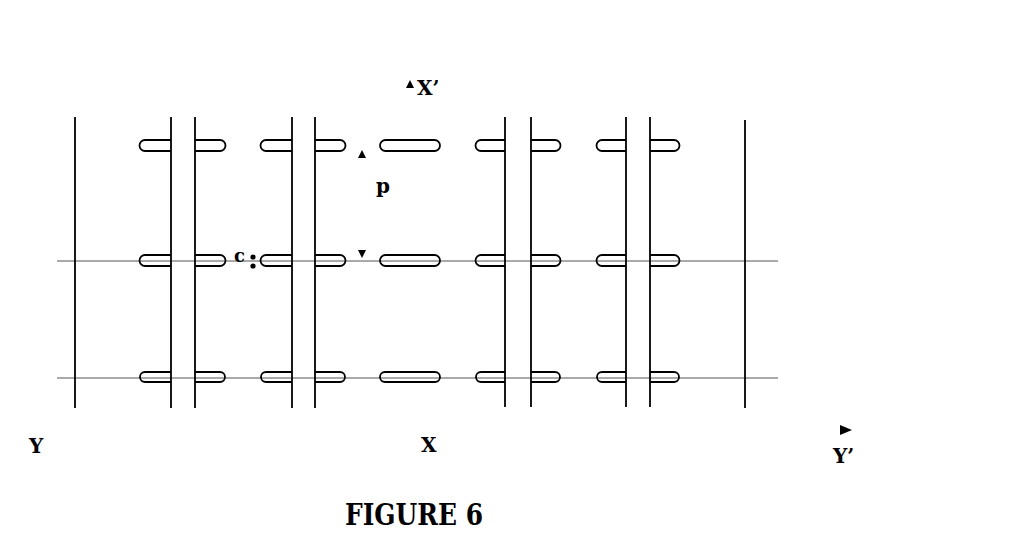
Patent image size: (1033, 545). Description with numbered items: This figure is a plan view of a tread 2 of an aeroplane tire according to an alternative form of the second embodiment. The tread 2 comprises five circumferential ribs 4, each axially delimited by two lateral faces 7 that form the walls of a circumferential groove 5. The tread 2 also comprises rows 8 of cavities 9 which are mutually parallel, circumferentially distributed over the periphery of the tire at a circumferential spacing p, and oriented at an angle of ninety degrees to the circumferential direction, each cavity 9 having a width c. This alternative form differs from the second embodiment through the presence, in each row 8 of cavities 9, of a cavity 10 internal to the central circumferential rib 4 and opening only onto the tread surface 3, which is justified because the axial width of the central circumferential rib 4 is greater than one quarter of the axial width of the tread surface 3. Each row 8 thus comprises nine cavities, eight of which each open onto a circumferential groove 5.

The tread 2 is at (508, 63).
The tread surface 3 is at (696, 330).
The circumferential rib 4 is at (432, 122).
The circumferential groove 5 is at (184, 126).
The lateral face 7 is at (316, 170).
The row of cavities 8 is at (115, 377).
The cavity 9 is at (278, 384).
The internal cavity 10 is at (430, 380).